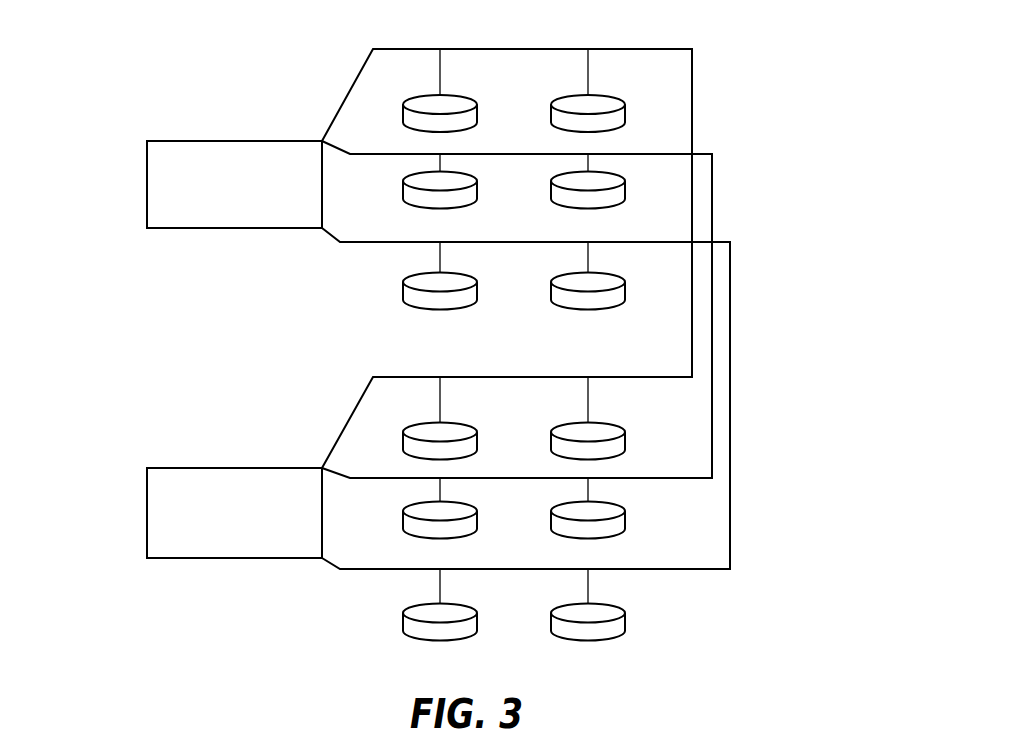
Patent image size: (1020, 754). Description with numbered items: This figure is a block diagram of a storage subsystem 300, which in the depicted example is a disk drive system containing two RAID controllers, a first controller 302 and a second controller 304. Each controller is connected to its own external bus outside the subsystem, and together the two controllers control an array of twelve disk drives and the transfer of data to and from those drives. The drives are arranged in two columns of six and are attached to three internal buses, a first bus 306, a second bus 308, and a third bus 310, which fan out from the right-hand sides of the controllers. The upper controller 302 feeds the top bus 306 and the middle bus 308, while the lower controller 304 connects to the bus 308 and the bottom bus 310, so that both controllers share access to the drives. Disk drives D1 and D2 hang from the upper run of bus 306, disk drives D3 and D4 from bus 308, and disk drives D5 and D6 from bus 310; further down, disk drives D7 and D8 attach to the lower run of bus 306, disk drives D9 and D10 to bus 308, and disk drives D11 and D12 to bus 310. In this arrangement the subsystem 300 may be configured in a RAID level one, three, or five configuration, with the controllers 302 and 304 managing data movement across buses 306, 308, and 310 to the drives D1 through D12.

The subsystem 300 is at (827, 71).
The controller 302 is at (147, 150).
The controller 304 is at (147, 515).
The bus 306 is at (634, 49).
The bus 308 is at (713, 163).
The bus 310 is at (730, 503).
The disk drive D1 is at (457, 129).
The disk drive D2 is at (605, 129).
The disk drive D3 is at (457, 206).
The disk drive D4 is at (605, 206).
The disk drive D5 is at (457, 308).
The disk drive D6 is at (605, 308).
The disk drive D7 is at (457, 458).
The disk drive D8 is at (605, 458).
The disk drive D9 is at (457, 538).
The disk drive D10 is at (605, 538).
The disk drive D11 is at (457, 641).
The disk drive D12 is at (605, 641).